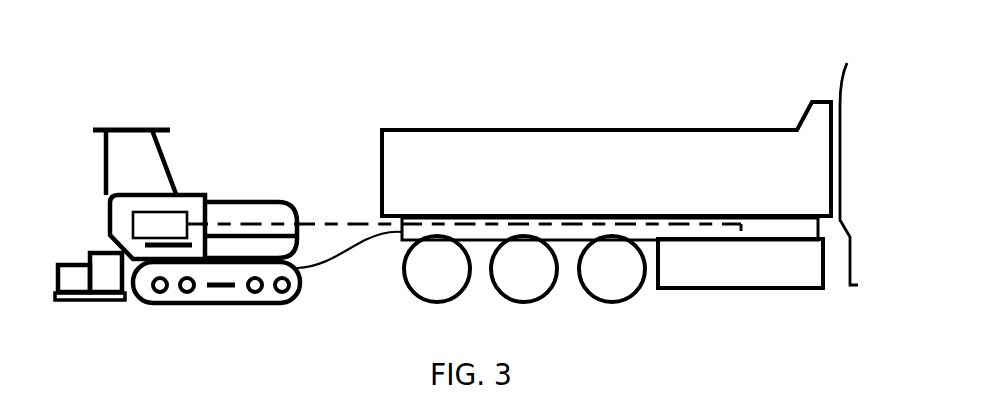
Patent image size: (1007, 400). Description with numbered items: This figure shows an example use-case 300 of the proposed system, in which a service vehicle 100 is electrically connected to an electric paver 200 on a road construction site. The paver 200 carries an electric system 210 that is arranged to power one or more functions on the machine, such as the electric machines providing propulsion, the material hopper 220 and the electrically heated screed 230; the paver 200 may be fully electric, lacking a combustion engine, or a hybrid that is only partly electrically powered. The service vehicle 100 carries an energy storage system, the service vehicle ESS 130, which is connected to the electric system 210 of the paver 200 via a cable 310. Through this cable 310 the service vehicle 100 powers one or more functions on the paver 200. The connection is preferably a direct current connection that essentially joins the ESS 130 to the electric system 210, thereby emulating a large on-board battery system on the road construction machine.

The use-case 300 is at (82, 56).
The electric paver 200 is at (148, 130).
The electric system 210 is at (182, 212).
The material hopper 220 is at (255, 212).
The electrically heated screed 230 is at (73, 277).
The service vehicle 100 is at (618, 130).
The service vehicle ESS 130 is at (754, 272).
The cable 310 is at (345, 252).